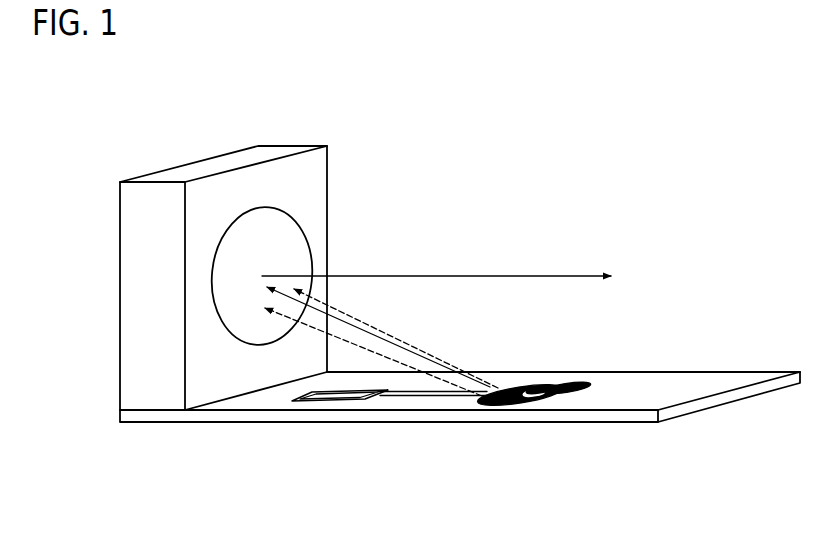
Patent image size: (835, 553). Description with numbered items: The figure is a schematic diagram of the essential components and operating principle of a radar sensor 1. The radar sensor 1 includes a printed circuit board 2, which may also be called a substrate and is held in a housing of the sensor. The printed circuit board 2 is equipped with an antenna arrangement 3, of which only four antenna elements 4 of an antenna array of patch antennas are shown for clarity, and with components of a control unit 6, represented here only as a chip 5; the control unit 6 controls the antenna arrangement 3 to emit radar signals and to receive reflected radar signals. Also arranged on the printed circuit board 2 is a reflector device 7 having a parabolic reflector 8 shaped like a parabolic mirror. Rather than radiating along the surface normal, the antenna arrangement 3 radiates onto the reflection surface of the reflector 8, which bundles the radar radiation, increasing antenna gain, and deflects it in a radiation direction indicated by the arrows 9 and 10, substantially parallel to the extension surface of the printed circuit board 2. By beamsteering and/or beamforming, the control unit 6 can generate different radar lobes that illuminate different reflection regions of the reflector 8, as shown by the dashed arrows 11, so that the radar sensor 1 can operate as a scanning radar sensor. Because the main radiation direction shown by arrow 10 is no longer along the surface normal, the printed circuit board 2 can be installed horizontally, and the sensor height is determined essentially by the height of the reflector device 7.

The radar sensor 1 is at (667, 233).
The printed circuit board 2 is at (220, 422).
The antenna arrangement 3 is at (517, 402).
The antenna elements 4 is at (542, 388).
The chip 5 is at (337, 400).
The control unit 6 is at (372, 403).
The reflector device 7 is at (244, 148).
The parabolic reflector 8 is at (300, 222).
The arrow 9 is at (372, 335).
The arrow 10 is at (433, 275).
The dashed arrows 11 is at (402, 343).